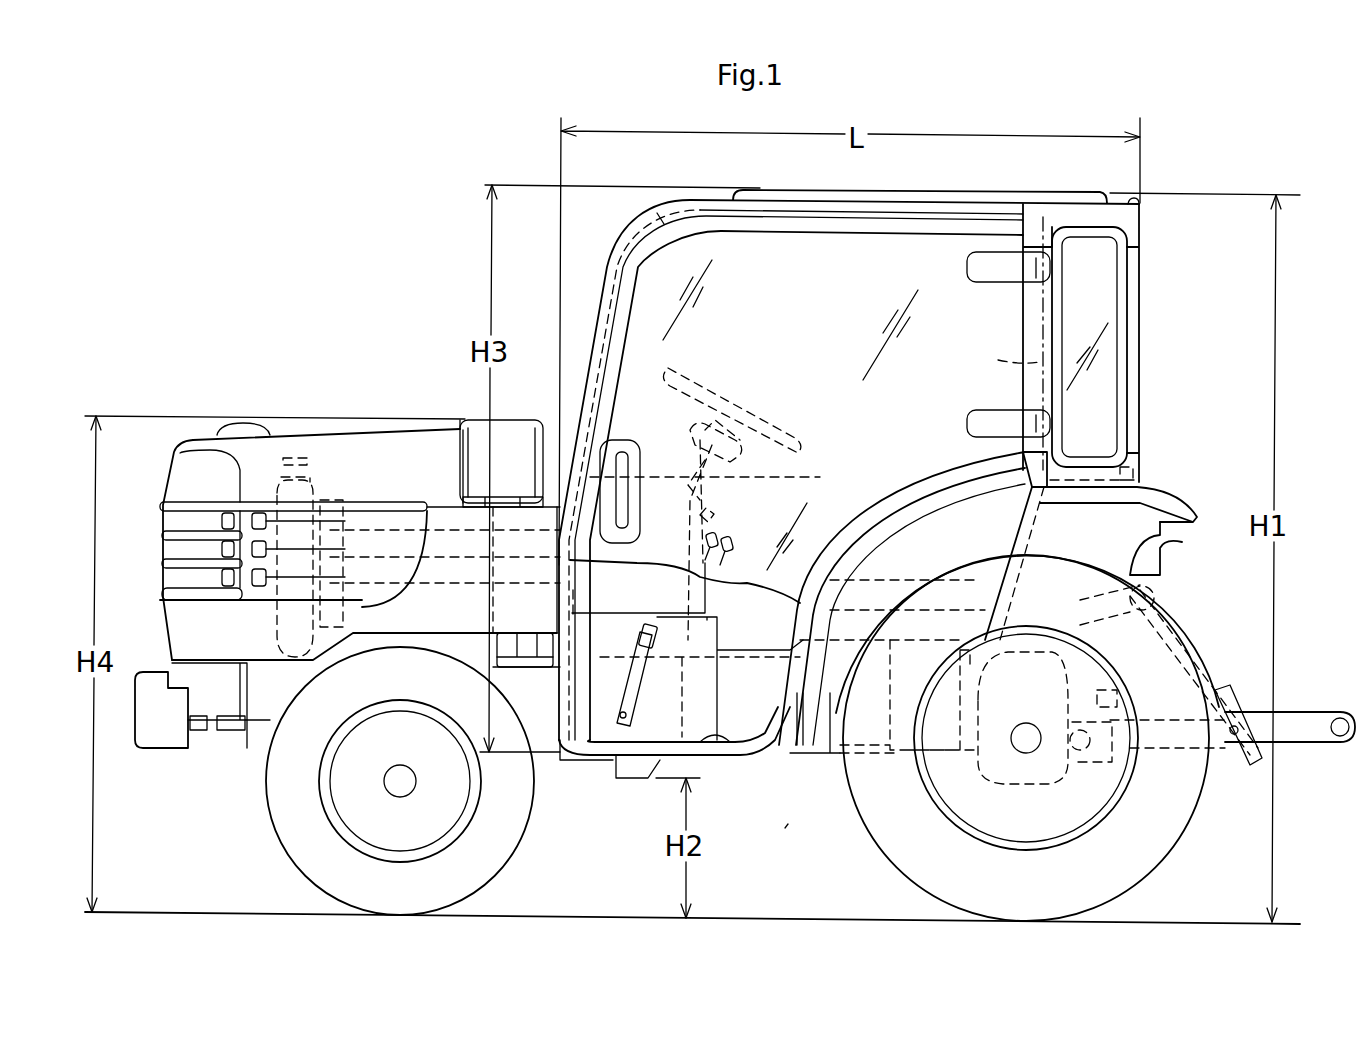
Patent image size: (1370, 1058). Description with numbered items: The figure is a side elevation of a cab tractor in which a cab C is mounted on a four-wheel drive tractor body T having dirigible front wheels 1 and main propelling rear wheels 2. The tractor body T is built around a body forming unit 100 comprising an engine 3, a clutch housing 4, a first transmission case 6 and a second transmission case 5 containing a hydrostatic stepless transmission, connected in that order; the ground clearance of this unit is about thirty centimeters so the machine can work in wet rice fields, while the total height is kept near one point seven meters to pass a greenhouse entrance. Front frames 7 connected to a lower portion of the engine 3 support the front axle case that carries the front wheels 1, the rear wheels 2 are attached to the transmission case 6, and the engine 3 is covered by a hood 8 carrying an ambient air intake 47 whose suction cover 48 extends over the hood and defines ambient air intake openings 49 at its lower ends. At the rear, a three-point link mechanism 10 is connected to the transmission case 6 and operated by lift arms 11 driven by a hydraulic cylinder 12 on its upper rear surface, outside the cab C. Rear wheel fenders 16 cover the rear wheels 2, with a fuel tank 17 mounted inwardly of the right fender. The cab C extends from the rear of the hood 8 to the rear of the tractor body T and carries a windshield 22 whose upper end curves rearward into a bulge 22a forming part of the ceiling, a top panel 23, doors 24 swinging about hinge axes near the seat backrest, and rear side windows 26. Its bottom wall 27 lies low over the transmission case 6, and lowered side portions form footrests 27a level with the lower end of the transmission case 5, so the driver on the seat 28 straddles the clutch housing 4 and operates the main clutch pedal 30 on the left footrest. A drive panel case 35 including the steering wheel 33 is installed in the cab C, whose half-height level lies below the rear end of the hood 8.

The front wheels 1 is at (273, 825).
The rear wheels 2 is at (1165, 857).
The engine 3 is at (445, 522).
The clutch housing 4 is at (573, 603).
The second transmission case 5 is at (808, 755).
The first transmission case 6 is at (905, 752).
The front frames 7 is at (265, 732).
The hood 8 is at (285, 437).
The three-point link mechanism 10 is at (1312, 712).
The lift arms 11 is at (1190, 640).
The hydraulic cylinder 12 is at (1012, 650).
The rear wheel fenders 16 is at (1160, 488).
The fuel tank 17 is at (1152, 548).
The windshield 22 is at (612, 302).
The rearward bulge 22a is at (660, 213).
The top panel 23 is at (965, 196).
The doors 24 is at (797, 248).
The rear side windows 26 is at (1110, 395).
The bottom wall 27 is at (750, 650).
The footrests 27a is at (733, 762).
The driver's seat 28 is at (985, 535).
The main clutch pedal 30 is at (653, 640).
The steering wheel 33 is at (720, 400).
The drive panel case 35 is at (722, 512).
The ambient air intake 47 is at (462, 420).
The suction cover 48 is at (523, 428).
The ambient air intake openings 49 is at (512, 510).
The body forming unit 100 is at (780, 832).
The tractor body T is at (360, 425).
The cab C is at (1141, 278).